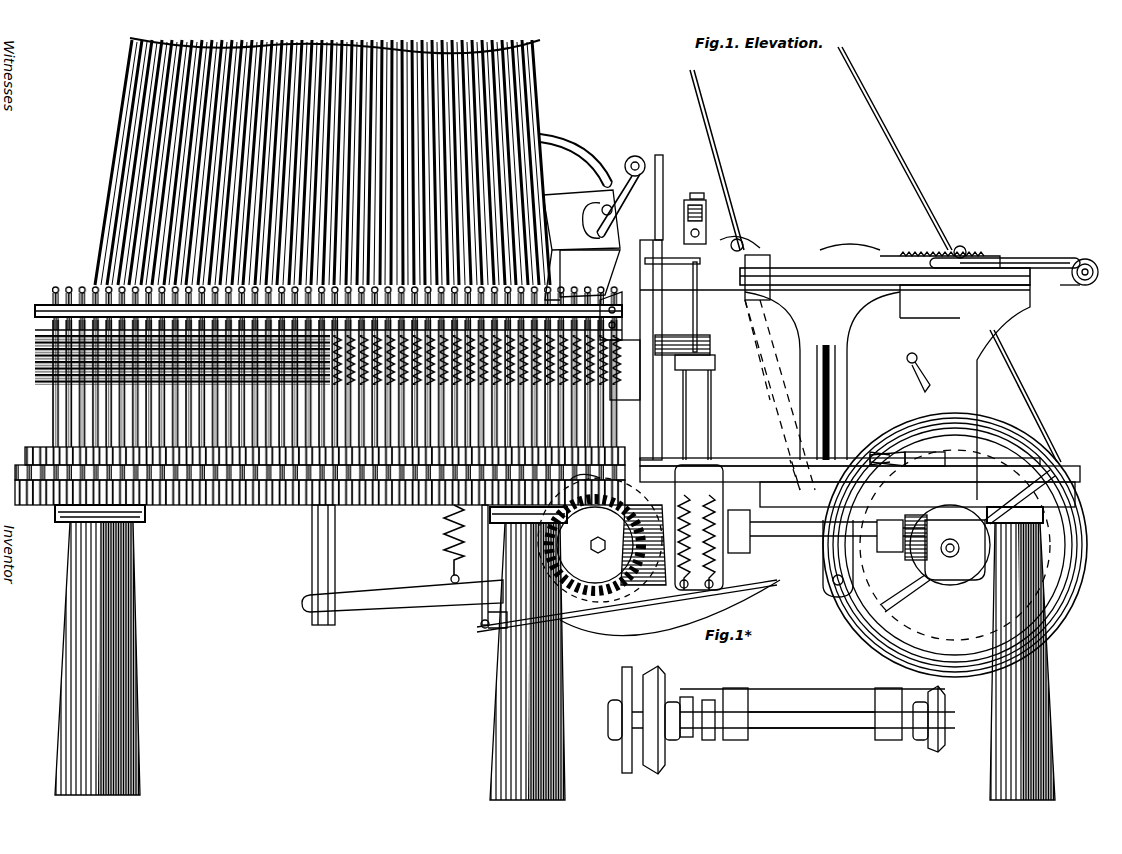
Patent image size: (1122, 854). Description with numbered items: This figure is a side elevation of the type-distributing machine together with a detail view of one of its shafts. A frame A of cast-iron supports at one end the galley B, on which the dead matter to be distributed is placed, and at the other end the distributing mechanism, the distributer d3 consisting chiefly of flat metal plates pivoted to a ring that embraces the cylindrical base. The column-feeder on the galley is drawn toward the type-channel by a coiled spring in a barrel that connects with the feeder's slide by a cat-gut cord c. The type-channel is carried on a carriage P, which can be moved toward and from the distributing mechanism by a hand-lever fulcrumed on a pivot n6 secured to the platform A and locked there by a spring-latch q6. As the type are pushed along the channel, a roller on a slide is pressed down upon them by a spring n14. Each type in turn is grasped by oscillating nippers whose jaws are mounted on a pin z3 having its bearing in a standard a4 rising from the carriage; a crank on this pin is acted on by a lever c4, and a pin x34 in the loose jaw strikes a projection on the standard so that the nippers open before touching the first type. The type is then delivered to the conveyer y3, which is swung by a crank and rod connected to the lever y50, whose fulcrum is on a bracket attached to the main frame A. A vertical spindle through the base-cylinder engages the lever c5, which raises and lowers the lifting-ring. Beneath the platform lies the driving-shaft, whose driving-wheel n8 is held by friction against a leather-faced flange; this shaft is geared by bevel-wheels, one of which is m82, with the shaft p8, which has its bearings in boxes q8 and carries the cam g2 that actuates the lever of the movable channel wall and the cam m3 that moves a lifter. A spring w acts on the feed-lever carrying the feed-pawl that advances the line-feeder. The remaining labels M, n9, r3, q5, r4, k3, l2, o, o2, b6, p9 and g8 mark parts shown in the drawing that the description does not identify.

In FIG. 1, the yarn bundle M is at (325, 161).
In FIG. 1, the needle bar n9 is at (30, 458).
In FIG. 1, the distributer d3 is at (336, 383).
In FIG. 1, the needle springs r3 is at (315, 360).
In FIG. 1, the frame A is at (547, 477).
The frame A is at (817, 700).
In FIG. 1, the left leg q5 is at (72, 650).
In FIG. 1, the lever c4 is at (516, 653).
In FIG. 1, the lever c5 is at (404, 566).
In FIG. 1, the cat-gut cord c is at (469, 544).
In FIG. 1, the conveyer y3 is at (581, 245).
In FIG. 1, the pin x34 is at (589, 160).
In FIG. 1, the pin z3 is at (622, 188).
In FIG. 1, the standard a4 is at (669, 197).
In FIG. 1, the spring n14 is at (698, 210).
In FIG. 1, the rods r4 is at (875, 254).
In FIG. 1, the galley B is at (885, 267).
In FIG. 1, the pulley k3 is at (1022, 265).
In FIG. 1, the carriage P is at (835, 370).
In FIG. 1, the spring cylinder l2 is at (686, 416).
In FIG. 1, the bevel-wheel m82 is at (659, 557).
The bevel-wheel m82 is at (945, 719).
In FIG. 1, the lever y50 is at (627, 606).
In FIG. 1, the shaft p8 is at (827, 535).
The shaft p8 is at (811, 719).
In FIG. 1, the driving-wheel n8 is at (945, 556).
In FIG. 1, the hanger o is at (844, 518).
In FIG. 1, the pivot n6 is at (907, 447).
In FIG. 1, the spring-latch q6 is at (963, 545).
In FIG. 1, the boxes q8 is at (1047, 653).
In FIG. 1, the bracket o2 is at (621, 343).
In FIG. 1, the jack b6 is at (560, 469).
The cam m3 is at (624, 720).
The bevel disc p9 is at (661, 720).
The cam g2 is at (687, 726).
The spring w is at (708, 727).
The collar g8 is at (812, 714).